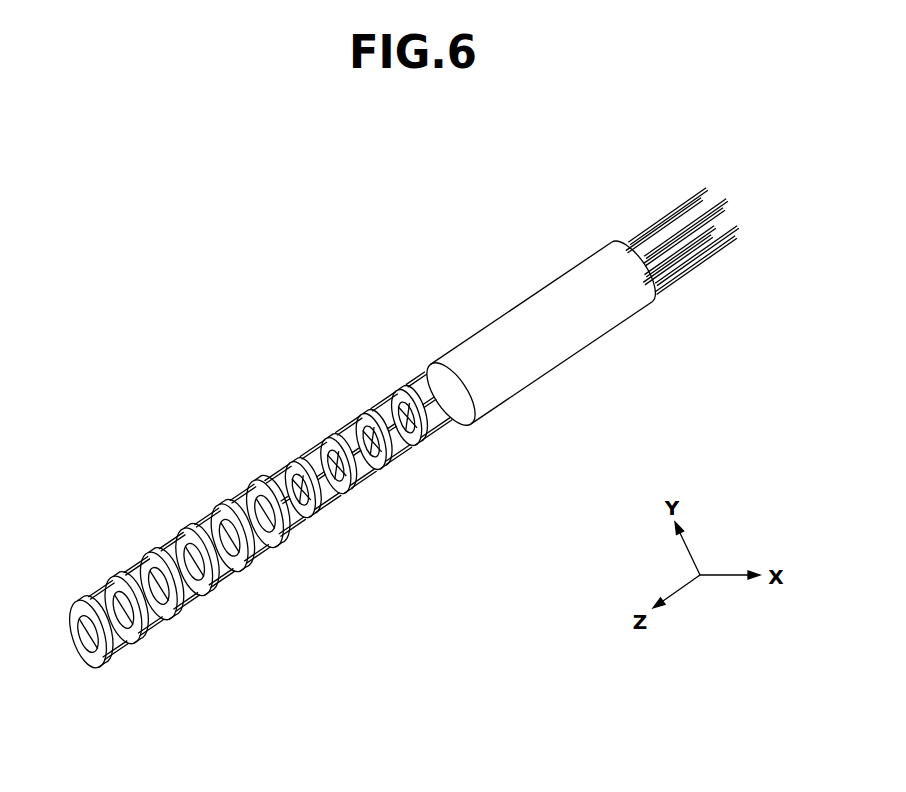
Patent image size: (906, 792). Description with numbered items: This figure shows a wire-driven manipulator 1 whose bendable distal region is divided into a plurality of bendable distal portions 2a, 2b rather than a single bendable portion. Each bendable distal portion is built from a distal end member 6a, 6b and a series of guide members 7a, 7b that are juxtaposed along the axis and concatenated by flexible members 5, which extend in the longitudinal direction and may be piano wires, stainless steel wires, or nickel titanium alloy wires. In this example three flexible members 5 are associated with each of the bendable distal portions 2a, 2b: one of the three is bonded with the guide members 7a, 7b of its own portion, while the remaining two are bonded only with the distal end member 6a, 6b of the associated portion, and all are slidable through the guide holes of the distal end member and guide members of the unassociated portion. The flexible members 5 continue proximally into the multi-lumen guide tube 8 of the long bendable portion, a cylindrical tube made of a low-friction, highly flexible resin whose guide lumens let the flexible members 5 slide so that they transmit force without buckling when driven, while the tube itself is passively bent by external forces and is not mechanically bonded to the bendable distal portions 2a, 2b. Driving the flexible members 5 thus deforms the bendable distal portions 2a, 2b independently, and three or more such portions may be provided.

The wire-driven manipulator 1 is at (383, 669).
The bendable distal portion 2a is at (480, 427).
The bendable distal portion 2b is at (297, 552).
The flexible members 5 is at (683, 278).
The distal end member 6a is at (252, 481).
The distal end member 6b is at (76, 601).
The guide members 7a is at (290, 463).
The guide members 7b is at (111, 577).
The multi-lumen guide tube 8 is at (478, 333).